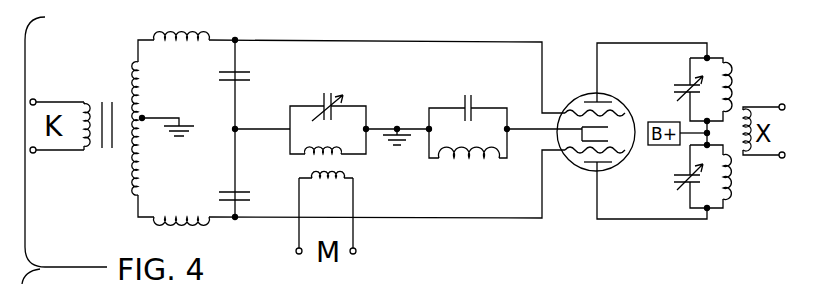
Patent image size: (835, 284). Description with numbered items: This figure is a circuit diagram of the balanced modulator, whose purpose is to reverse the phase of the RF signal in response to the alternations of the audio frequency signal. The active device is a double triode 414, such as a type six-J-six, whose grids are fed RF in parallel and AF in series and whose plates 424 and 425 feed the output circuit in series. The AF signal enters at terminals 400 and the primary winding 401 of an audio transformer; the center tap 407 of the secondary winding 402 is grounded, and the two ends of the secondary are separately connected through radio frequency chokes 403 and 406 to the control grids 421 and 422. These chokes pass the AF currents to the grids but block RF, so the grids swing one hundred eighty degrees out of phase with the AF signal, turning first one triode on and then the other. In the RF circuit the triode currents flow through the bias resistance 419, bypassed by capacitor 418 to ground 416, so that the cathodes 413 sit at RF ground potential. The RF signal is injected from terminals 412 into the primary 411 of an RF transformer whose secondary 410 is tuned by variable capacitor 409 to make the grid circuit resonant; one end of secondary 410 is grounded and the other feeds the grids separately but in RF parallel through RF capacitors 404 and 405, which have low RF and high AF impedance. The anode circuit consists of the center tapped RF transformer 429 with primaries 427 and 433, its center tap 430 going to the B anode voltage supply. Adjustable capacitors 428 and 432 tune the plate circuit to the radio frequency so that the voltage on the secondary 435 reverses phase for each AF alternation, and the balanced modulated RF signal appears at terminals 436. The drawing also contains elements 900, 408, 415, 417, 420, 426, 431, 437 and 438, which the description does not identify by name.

The input terminal 900 is at (33, 99).
The terminals 400 is at (33, 153).
The primary winding 401 is at (88, 106).
The secondary winding 402 is at (128, 165).
The radio frequency choke 403 is at (182, 214).
The RF capacitor 404 is at (248, 192).
The RF capacitor 405 is at (248, 72).
The radio frequency choke 406 is at (183, 45).
The center tap 407 is at (182, 125).
The junction 408 is at (236, 128).
The variable capacitor 409 is at (331, 97).
The secondary 410 is at (338, 152).
The primary 411 is at (342, 174).
The terminals 412 is at (296, 253).
The triode cathodes 413 is at (575, 128).
The double triode 414 is at (569, 160).
The junction 415 is at (367, 127).
The ground 416 is at (400, 126).
The tank circuit junction 417 is at (428, 126).
The capacitor 418 is at (471, 96).
The resistance 419 is at (464, 158).
The junction 420 is at (509, 131).
The control grid 421 is at (616, 111).
The control grid 422 is at (614, 152).
The plate 424 is at (592, 101).
The plate 425 is at (594, 168).
The junction 426 is at (709, 57).
The primary 427 is at (731, 82).
The capacitor 428 is at (681, 85).
The center tapped RF transformer 429 is at (725, 62).
The center tap 430 is at (712, 137).
The inductor 431 is at (728, 192).
The capacitor 432 is at (677, 183).
The primary 433 is at (712, 210).
The secondary 435 is at (792, 144).
The terminals 436 is at (786, 100).
The junction 437 is at (236, 39).
The junction 438 is at (236, 219).